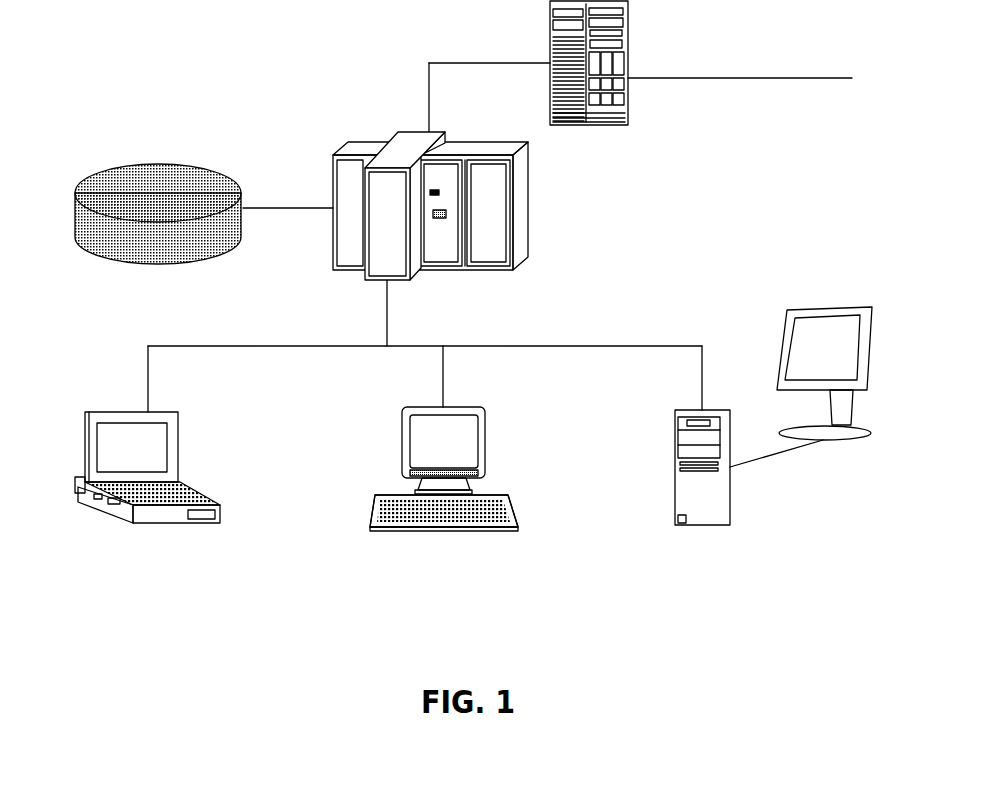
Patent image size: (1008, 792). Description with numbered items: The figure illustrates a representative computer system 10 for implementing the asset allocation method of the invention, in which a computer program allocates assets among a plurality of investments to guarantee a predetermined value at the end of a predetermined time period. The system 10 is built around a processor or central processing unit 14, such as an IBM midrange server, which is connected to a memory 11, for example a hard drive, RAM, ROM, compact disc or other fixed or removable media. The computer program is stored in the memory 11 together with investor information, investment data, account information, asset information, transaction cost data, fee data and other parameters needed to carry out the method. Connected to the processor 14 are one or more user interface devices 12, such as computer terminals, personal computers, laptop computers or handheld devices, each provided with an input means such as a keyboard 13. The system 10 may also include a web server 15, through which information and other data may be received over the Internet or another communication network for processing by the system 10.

The computer system 10 is at (278, 59).
The memory 11 is at (110, 172).
The user interface devices 12 is at (185, 523).
The keyboard 13 is at (372, 507).
The processor or central processing unit 14 is at (528, 207).
The web server 15 is at (550, 13).